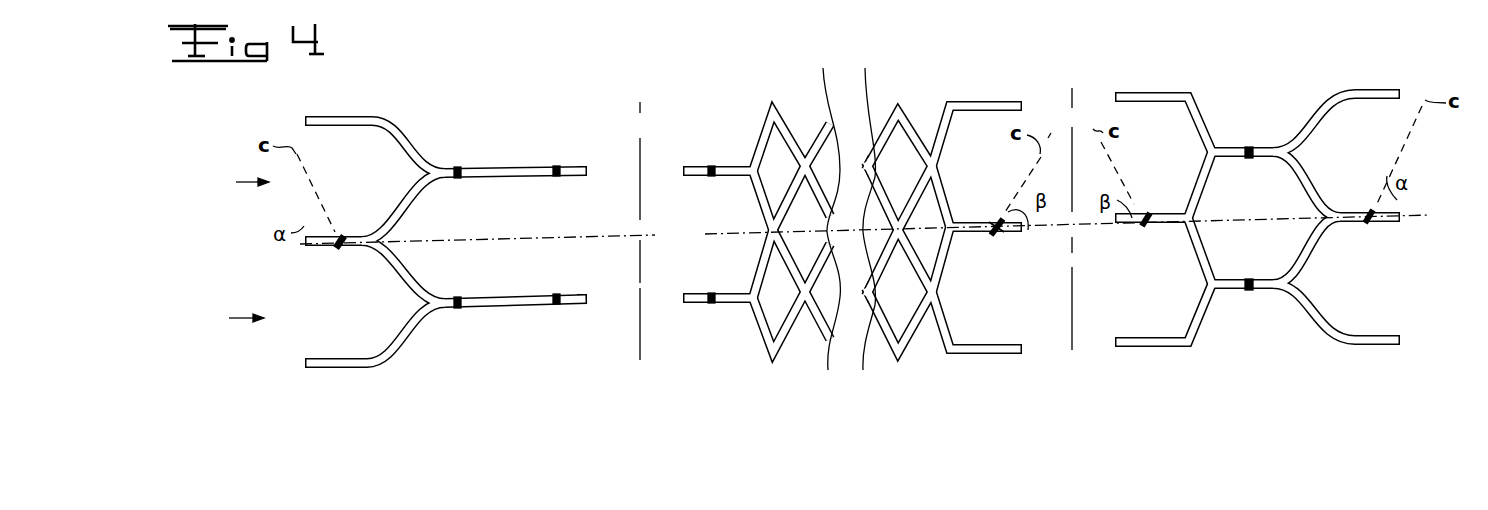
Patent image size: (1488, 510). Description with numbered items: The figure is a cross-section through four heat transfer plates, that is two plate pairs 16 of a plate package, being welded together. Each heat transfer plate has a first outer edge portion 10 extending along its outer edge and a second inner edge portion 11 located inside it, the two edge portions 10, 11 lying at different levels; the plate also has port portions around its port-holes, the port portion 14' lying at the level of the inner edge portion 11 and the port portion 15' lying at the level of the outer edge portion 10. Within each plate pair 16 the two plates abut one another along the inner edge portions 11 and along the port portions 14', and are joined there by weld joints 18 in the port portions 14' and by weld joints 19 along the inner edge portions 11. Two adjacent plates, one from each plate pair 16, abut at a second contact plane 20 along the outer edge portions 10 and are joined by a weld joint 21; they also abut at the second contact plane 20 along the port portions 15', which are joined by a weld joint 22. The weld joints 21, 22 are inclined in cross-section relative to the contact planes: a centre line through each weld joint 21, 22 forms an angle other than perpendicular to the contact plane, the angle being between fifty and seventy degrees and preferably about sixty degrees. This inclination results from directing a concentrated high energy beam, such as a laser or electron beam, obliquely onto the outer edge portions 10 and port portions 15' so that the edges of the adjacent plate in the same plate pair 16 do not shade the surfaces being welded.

The outer edge portion 10 is at (316, 237).
The inner edge portion 11 is at (443, 300).
The port portion 14' is at (645, 235).
The port portion 15' is at (1069, 267).
The plate pair 16 is at (231, 251).
The weld joint 18 is at (711, 166).
The weld joint 19 is at (457, 168).
The second contact plane 20 is at (1425, 214).
The weld joint 21 is at (340, 237).
The weld joint 22 is at (995, 227).